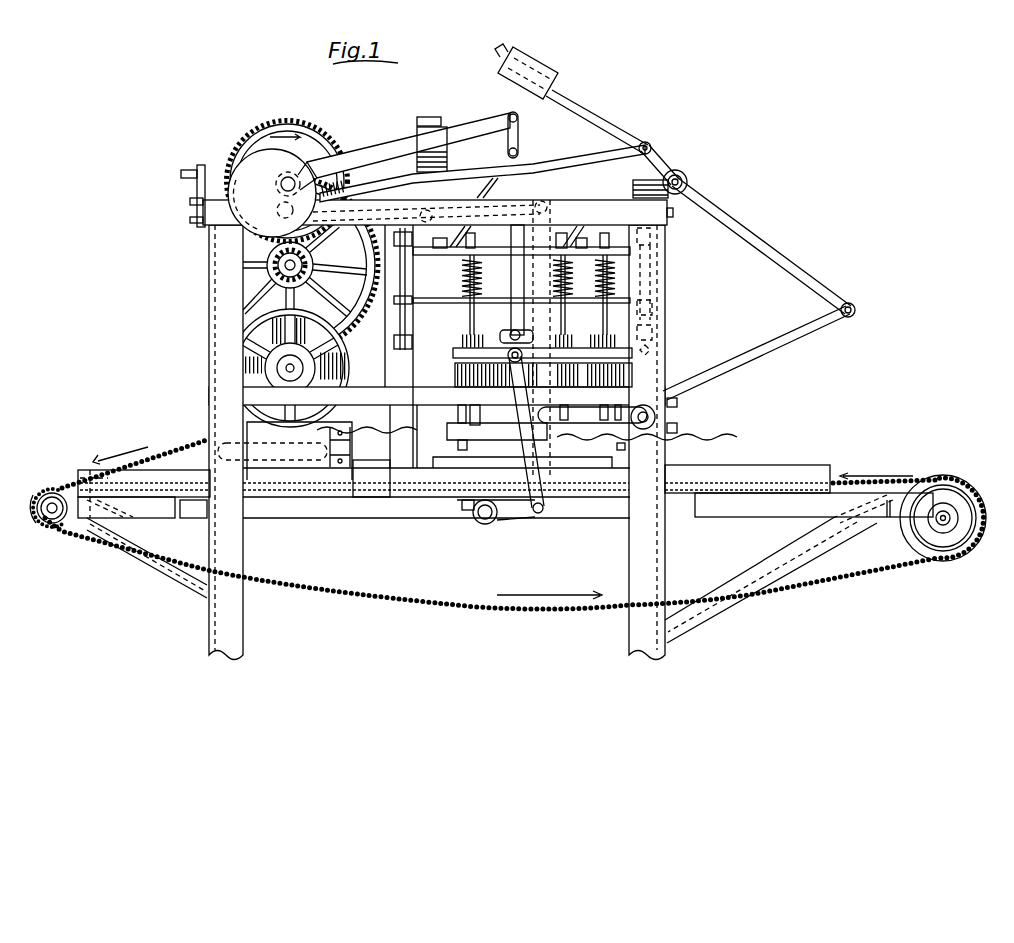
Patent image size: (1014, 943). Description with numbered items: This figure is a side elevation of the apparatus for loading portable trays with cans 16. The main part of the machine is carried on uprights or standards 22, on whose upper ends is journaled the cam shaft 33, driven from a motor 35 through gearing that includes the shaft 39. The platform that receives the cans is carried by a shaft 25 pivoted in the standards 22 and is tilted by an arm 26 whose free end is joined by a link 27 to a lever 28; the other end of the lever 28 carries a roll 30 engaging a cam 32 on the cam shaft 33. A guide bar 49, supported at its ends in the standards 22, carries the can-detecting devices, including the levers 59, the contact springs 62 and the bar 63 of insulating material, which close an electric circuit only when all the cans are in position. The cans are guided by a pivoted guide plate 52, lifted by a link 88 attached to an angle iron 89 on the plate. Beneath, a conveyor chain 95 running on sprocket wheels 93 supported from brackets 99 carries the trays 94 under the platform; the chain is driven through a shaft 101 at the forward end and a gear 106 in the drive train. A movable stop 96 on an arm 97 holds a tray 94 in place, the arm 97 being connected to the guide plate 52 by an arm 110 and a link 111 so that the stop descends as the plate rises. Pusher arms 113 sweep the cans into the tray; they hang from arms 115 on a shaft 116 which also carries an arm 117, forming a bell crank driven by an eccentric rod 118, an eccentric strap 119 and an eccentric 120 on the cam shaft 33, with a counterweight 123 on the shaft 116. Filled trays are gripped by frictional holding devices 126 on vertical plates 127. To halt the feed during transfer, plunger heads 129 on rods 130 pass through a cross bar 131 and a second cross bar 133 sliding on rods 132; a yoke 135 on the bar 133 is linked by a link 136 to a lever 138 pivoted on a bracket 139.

The cans 16 is at (462, 373).
The uprights or standards 22 is at (230, 633).
The shaft 25 is at (663, 398).
The arm 26 is at (660, 421).
The link 27 is at (543, 318).
The lever 28 is at (532, 196).
The roll 30 is at (265, 255).
The cam 32 is at (235, 150).
The cam shaft 33 is at (288, 178).
The motor 35 is at (352, 368).
The shaft 39 is at (317, 273).
The guide bar 49 is at (255, 396).
The guide plate 52 is at (455, 352).
The lever 59 is at (470, 418).
The contact springs 62 is at (498, 437).
The bar of insulating material 63 is at (465, 440).
The link 88 is at (511, 272).
The angle iron 89 is at (505, 327).
The sprocket wheels 93 is at (52, 523).
The tray 94 is at (600, 458).
The conveyor chain 95 is at (512, 612).
The movable stop 96 is at (433, 473).
The arm 97 is at (457, 503).
The brackets 99 is at (143, 537).
The shaft 101 is at (52, 505).
The gear 106 is at (183, 446).
The arm 110 is at (520, 512).
The link 111 is at (545, 483).
The pusher arms 113 is at (800, 335).
The arms 115 is at (756, 244).
The shaft 116 is at (690, 182).
The arm 117 is at (657, 162).
The eccentric rod 118 is at (640, 145).
The eccentric strap 119 is at (320, 165).
The eccentric 120 is at (332, 135).
The counterweight 123 is at (558, 78).
The frictional holding devices 126 is at (287, 452).
The plates 127 is at (323, 470).
The plunger heads 129 is at (468, 340).
The rods 130 is at (604, 335).
The cross bar 131 is at (440, 300).
The rods 132 is at (640, 333).
The cross bar 133 is at (488, 256).
The yoke 135 is at (473, 191).
The link 136 is at (518, 135).
The lever 138 is at (480, 127).
The bracket 139 is at (428, 118).